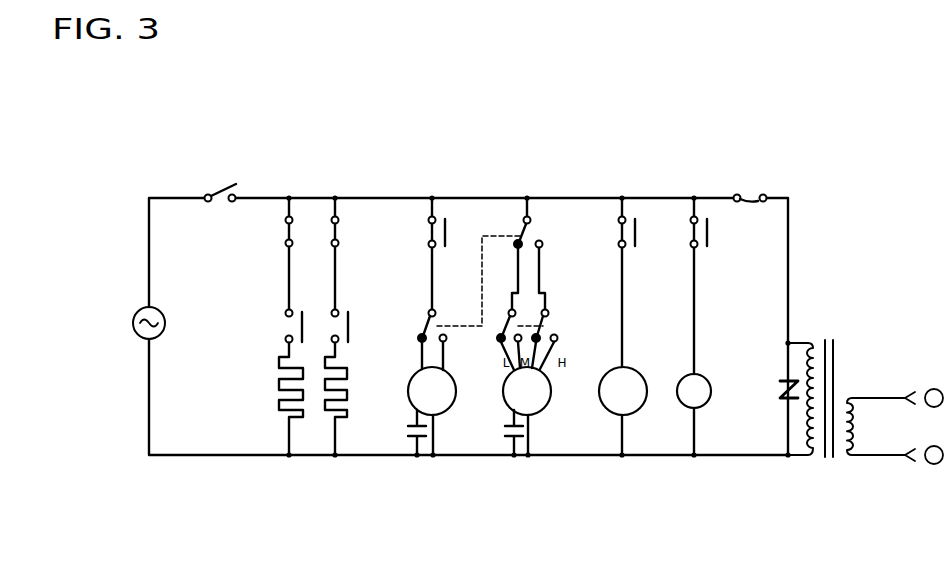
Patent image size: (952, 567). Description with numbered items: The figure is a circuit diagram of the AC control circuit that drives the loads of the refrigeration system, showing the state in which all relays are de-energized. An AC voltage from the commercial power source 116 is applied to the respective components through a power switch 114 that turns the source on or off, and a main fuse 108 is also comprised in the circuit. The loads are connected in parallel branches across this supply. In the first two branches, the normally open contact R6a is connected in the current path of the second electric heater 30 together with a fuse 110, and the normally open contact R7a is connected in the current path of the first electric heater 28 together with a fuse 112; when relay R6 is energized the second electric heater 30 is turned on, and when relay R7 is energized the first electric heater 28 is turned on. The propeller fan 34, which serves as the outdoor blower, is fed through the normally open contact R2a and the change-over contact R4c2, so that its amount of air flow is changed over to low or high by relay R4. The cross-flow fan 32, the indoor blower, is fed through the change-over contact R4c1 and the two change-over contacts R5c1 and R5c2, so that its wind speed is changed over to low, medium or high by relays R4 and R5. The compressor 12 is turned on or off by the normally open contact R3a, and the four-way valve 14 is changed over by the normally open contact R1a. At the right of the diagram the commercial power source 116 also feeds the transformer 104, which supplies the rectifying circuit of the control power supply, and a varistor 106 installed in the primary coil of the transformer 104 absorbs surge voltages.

The compressor 12 is at (630, 407).
The four-way valve 14 is at (691, 408).
The first electric heater 28 is at (348, 418).
The second electric heater 30 is at (302, 418).
The cross-flow fan 32 is at (534, 410).
The propeller fan 34 is at (443, 407).
The transformer 104 is at (834, 342).
The varistor 106 is at (777, 394).
The main fuse 108 is at (752, 194).
The fuse 110 is at (294, 232).
The fuse 112 is at (339, 240).
The power switch 114 is at (224, 186).
The commercial power source 116 is at (134, 335).
The normally open contact R1a is at (708, 250).
The normally open contact R2a is at (447, 228).
The normally open contact R3a is at (638, 230).
The change-over contact R4c1 is at (529, 232).
The change-over contact R4c2 is at (428, 327).
The change-over contact R5c1 is at (553, 322).
The change-over contact R5c2 is at (504, 323).
The normally open contact R6a is at (304, 327).
The normally open contact R7a is at (350, 324).